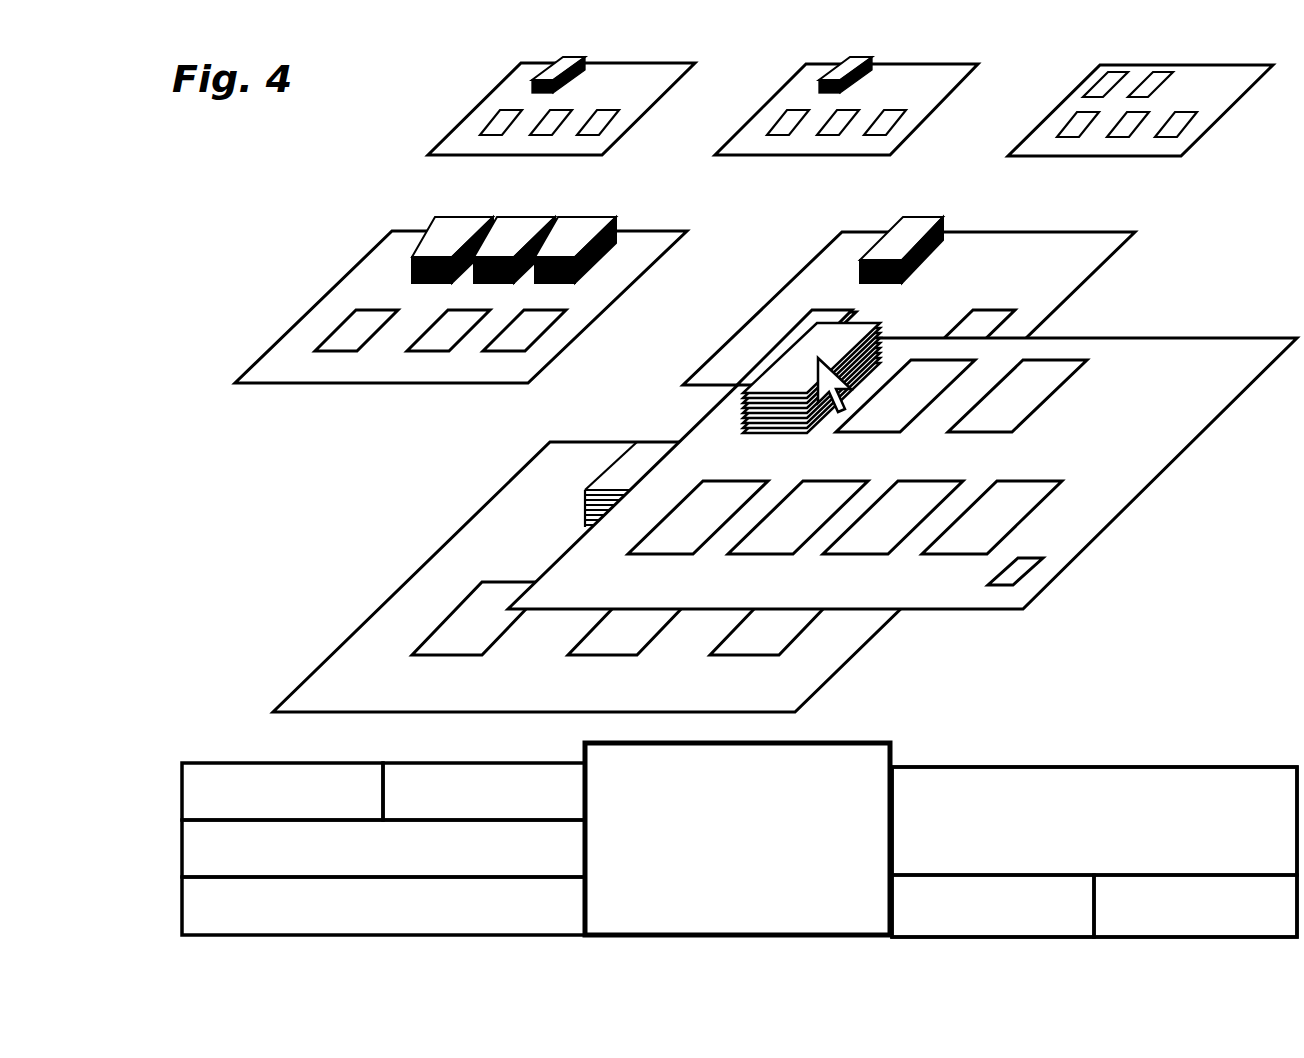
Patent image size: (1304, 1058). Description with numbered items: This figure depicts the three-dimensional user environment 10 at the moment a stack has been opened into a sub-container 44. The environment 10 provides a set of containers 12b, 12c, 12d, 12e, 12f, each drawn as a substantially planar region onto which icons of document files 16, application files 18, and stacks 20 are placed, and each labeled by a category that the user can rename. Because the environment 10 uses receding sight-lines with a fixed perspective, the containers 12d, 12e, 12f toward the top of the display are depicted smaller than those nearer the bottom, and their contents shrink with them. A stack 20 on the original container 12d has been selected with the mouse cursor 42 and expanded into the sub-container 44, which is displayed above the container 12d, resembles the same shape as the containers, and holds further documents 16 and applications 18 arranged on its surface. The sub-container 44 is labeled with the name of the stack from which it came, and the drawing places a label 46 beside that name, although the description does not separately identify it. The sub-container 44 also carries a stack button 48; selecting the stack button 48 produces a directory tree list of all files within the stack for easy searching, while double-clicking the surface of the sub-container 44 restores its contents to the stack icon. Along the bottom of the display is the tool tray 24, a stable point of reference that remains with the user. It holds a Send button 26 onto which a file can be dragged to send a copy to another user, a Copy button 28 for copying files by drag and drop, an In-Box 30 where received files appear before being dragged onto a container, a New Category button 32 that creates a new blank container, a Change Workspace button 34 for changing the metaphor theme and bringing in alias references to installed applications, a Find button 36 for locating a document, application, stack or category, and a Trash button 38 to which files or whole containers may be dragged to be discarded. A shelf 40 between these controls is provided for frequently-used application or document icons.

The three-dimensional user environment 10 is at (296, 178).
The container 12b is at (593, 303).
The container 12c is at (1040, 307).
The container 12d is at (645, 97).
The container 12e is at (905, 123).
The container 12f is at (1197, 123).
The document file icon 16 is at (912, 520).
The application file icon 18 is at (1011, 520).
The stack 20 is at (838, 361).
The tool tray 24 is at (957, 748).
The Send button 26 is at (353, 816).
The Copy button 28 is at (553, 818).
The In-Box 30 is at (1198, 843).
The New Category button 32 is at (223, 863).
The Change Workspace button 34 is at (220, 920).
The Find button 36 is at (1063, 930).
The Trash button 38 is at (1258, 930).
The shelf 40 is at (818, 839).
The mouse cursor 42 is at (878, 370).
The sub-container 44 is at (1120, 494).
The stack label (Stack2) 46 is at (1190, 375).
The stack button 48 is at (1027, 570).